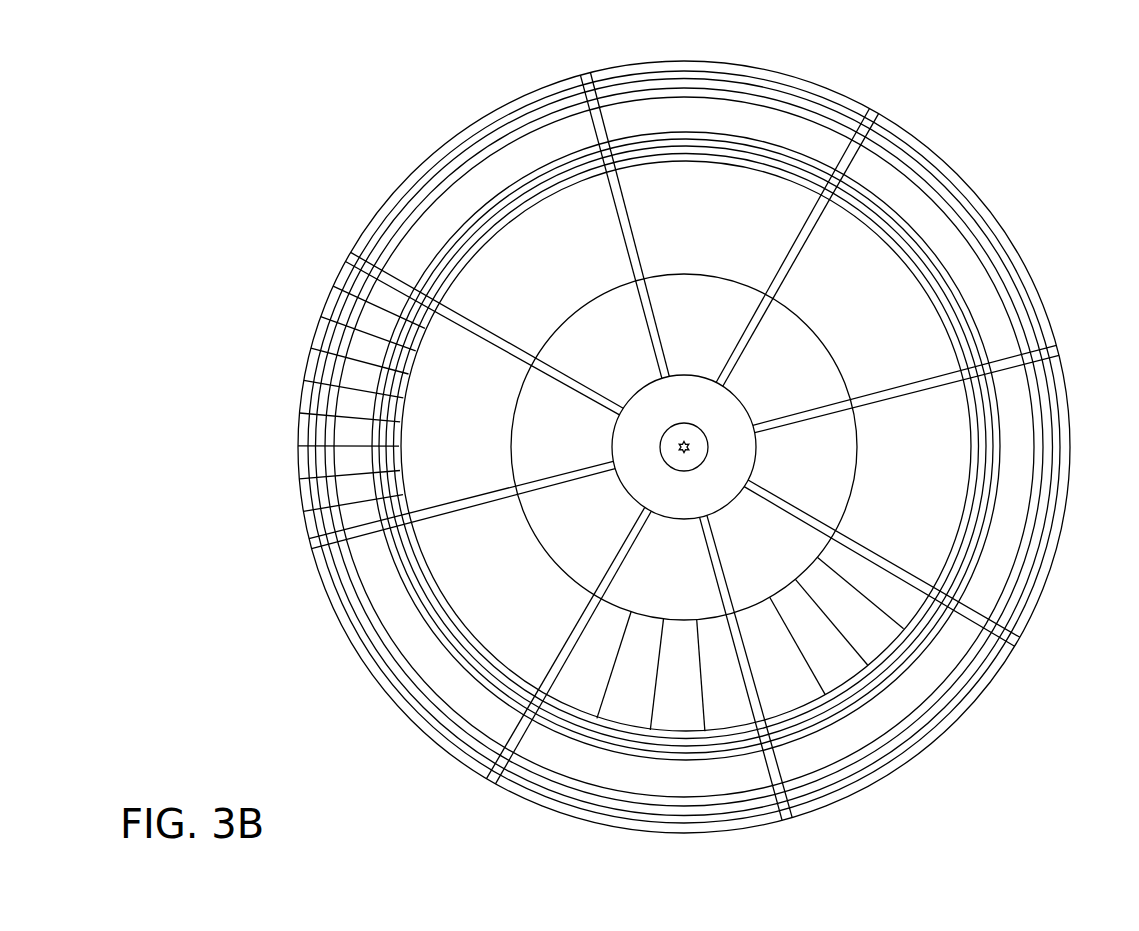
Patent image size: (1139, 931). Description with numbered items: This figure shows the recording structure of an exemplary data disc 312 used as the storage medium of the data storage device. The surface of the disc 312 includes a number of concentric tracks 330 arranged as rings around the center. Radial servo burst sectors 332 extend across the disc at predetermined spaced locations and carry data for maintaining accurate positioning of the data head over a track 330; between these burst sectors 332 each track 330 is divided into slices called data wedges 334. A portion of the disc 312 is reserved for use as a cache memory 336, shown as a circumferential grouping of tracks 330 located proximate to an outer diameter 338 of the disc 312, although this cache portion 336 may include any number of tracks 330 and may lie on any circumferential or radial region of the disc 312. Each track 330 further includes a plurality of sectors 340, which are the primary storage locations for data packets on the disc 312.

The data disc 312 is at (863, 80).
The concentric tracks 330 is at (394, 564).
The radial servo burst sectors 332 is at (1058, 347).
The data wedges 334 is at (441, 438).
The cache memory 336 is at (890, 780).
The outer diameter 338 is at (991, 688).
The sectors 340 is at (340, 442).